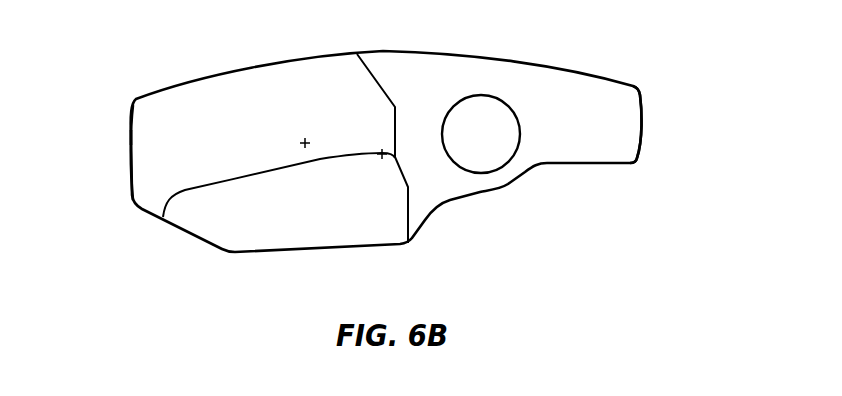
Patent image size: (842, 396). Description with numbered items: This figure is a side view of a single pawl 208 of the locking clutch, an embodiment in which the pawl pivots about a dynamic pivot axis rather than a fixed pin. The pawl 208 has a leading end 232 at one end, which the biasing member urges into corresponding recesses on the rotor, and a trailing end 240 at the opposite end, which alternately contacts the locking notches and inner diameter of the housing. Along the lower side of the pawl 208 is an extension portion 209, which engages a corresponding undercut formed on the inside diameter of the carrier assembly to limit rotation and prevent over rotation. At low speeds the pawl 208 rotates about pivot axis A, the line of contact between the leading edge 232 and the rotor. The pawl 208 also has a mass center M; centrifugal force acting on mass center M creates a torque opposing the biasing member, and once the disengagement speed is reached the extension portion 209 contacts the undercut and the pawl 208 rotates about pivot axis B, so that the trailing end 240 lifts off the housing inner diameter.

The pawl 208 is at (175, 144).
The extension portion 209 is at (328, 230).
The leading end 232 is at (130, 177).
The trailing end 240 is at (647, 128).
The pivot axis A is at (130, 137).
The mass center M is at (304, 140).
The pivot axis B is at (379, 151).